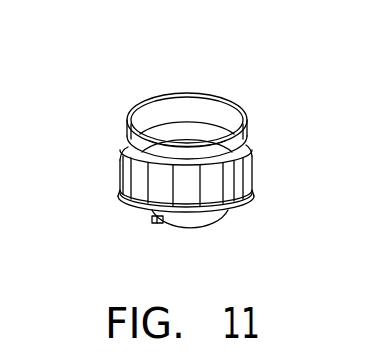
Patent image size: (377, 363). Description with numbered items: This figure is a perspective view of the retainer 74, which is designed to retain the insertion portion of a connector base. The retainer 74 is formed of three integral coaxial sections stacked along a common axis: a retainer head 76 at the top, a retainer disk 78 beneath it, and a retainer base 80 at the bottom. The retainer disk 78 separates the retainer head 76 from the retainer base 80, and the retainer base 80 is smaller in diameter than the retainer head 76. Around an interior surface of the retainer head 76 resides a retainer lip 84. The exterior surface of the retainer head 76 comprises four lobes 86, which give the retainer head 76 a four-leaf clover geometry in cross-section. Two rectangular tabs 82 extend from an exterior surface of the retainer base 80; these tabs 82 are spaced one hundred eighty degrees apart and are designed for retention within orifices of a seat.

The retainer 74 is at (90, 93).
The retainer head 76 is at (247, 97).
The retainer disk 78 is at (244, 202).
The retainer base 80 is at (201, 228).
The tabs 82 is at (157, 219).
The retainer lip 84 is at (198, 127).
The lobes 86 is at (148, 99).